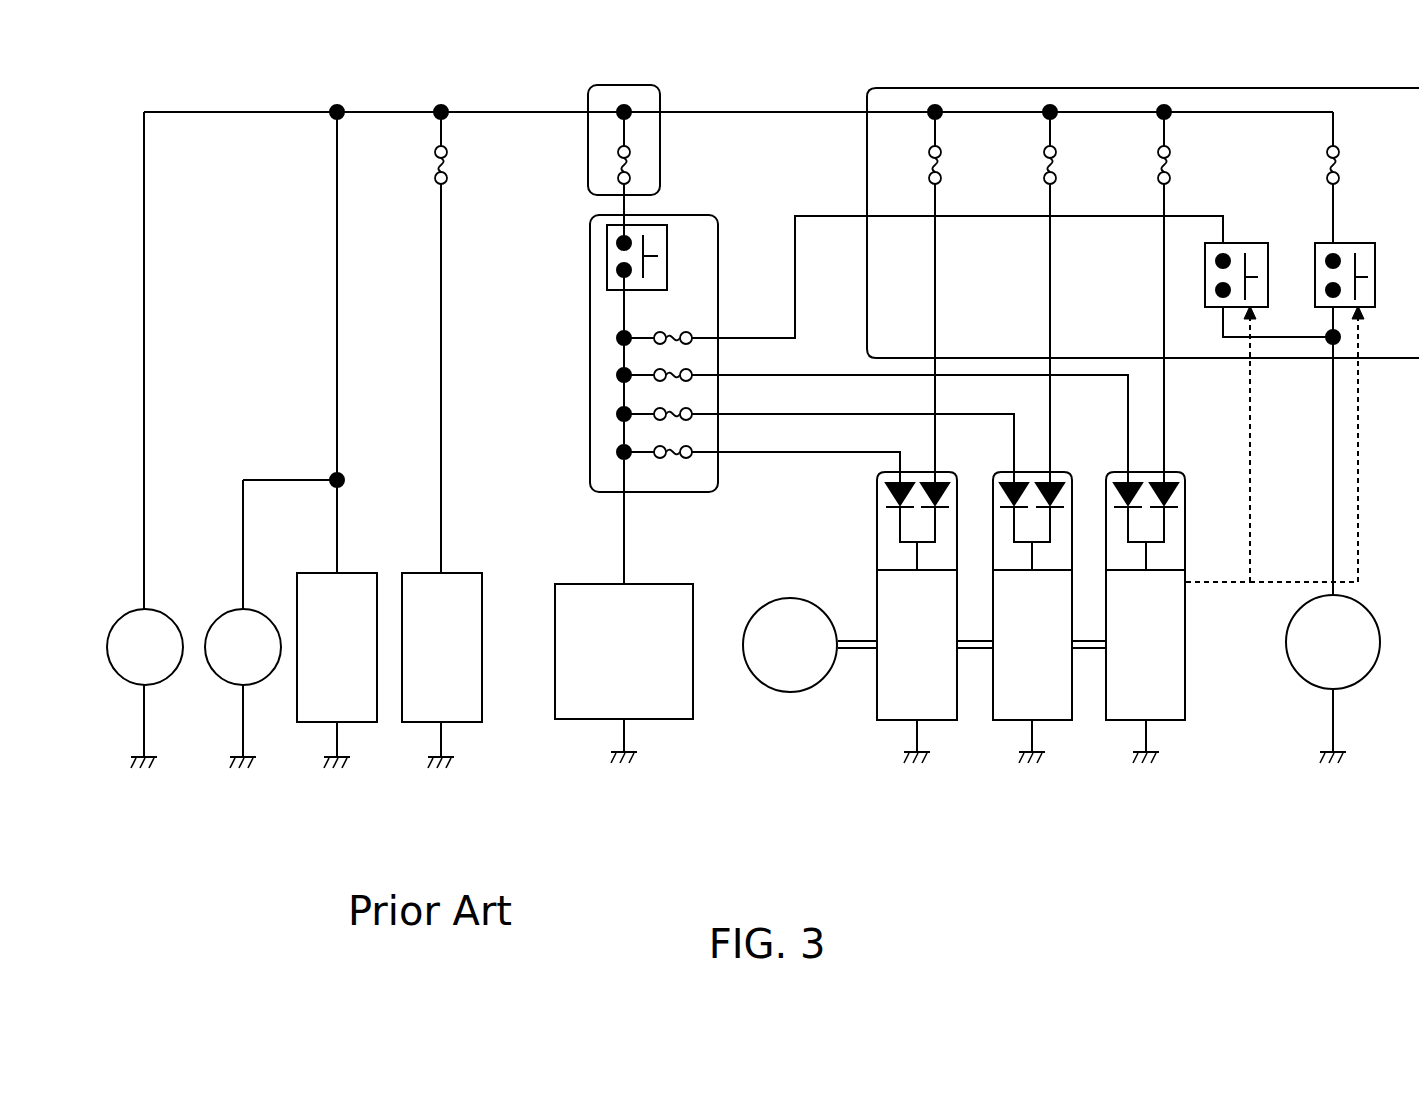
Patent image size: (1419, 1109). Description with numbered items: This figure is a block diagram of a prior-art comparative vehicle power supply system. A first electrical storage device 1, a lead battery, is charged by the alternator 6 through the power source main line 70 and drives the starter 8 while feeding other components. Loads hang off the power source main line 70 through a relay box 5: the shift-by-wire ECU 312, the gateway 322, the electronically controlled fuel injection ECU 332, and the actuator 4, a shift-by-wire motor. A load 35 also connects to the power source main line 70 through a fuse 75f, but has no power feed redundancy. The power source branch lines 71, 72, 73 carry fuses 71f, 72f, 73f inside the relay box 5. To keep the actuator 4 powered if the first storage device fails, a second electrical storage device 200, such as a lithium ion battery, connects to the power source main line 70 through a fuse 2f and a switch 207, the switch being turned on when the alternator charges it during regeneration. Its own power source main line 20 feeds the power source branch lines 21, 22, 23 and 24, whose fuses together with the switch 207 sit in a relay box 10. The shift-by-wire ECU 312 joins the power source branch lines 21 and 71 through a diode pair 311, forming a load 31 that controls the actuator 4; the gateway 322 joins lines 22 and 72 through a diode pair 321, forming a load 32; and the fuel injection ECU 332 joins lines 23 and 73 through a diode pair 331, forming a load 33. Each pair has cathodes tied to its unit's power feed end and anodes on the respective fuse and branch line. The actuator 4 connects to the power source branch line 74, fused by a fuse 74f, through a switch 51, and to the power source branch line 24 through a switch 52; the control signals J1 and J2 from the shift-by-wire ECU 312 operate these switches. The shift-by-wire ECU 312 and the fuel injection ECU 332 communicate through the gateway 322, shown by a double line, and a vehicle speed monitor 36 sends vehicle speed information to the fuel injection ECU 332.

The first electrical storage device 1 is at (362, 723).
The fuse 2f is at (630, 170).
The actuator 4 is at (1374, 672).
The relay box 5 is at (1404, 362).
The alternator 6 is at (134, 608).
The starter 8 is at (233, 608).
The relay box 10 is at (614, 399).
The power source main line 20 is at (622, 534).
The power source branch line 21 is at (840, 373).
The power source branch line 22 is at (826, 417).
The power source branch line 23 is at (766, 455).
The power source branch line 24 is at (834, 215).
The load 31 is at (1192, 655).
The load 32 is at (1013, 675).
The load 33 is at (876, 675).
The load 35 is at (467, 723).
The vehicle speed monitor 36 is at (793, 692).
The switch 51 is at (1376, 280).
The switch 52 is at (1258, 243).
The power source main line 70 is at (741, 110).
The power source branch line 71 is at (1162, 250).
The power source branch line 72 is at (1053, 320).
The power source branch line 73 is at (938, 310).
The power source branch line 74 is at (1337, 128).
The fuse 71f is at (1170, 170).
The fuse 72f is at (1055, 170).
The fuse 73f is at (940, 170).
The fuse 74f is at (1340, 170).
The fuse 75f is at (447, 168).
The second electrical storage device 200 is at (580, 722).
The switch 207 is at (607, 258).
The diode pair 311 is at (1186, 520).
The shift-by-wire ECU 312 is at (1186, 655).
The diode pair 321 is at (992, 545).
The gateway 322 is at (1060, 720).
The diode pair 331 is at (876, 545).
The electronically controlled fuel injection ECU 332 is at (890, 720).
The control signal J1 is at (1318, 444).
The control signal J2 is at (1232, 444).